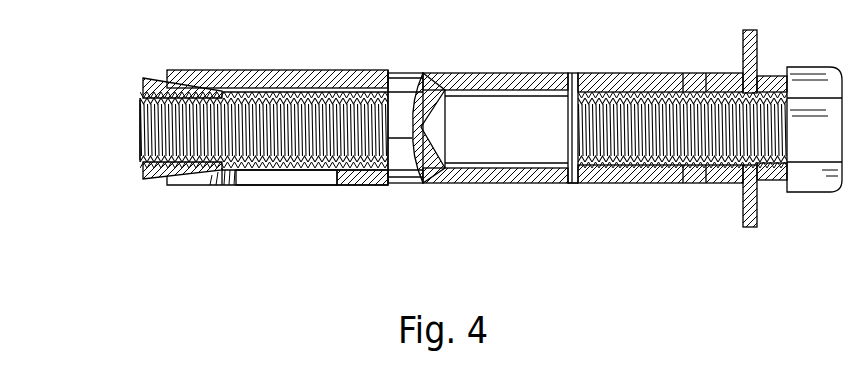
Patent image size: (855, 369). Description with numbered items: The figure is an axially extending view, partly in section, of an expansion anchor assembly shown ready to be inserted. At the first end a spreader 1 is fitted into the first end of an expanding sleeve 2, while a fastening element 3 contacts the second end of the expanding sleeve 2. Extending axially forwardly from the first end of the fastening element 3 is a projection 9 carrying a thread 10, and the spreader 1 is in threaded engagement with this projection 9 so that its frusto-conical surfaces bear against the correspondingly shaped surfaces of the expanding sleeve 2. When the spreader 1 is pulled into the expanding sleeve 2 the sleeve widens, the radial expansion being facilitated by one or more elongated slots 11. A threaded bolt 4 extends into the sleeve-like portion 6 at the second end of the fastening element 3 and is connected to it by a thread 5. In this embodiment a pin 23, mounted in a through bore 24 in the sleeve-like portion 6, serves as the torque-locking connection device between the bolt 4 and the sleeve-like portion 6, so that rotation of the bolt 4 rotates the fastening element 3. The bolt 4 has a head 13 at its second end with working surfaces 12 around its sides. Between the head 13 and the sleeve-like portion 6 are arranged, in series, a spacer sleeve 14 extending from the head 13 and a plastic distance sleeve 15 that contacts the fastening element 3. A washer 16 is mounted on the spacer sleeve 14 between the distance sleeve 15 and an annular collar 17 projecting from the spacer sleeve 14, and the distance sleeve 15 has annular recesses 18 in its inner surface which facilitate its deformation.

The spreader 1 is at (147, 161).
The expanding sleeve 2 is at (283, 72).
The fastening element 3 is at (407, 70).
The threaded bolt 4 is at (626, 86).
The thread 5 is at (640, 150).
The sleeve-like portion 6 is at (520, 73).
The projection 9 is at (137, 120).
The thread 10 is at (318, 145).
The elongated slot 11 is at (263, 182).
The working surfaces 12 is at (815, 150).
The head 13 is at (812, 63).
The spacer sleeve 14 is at (780, 182).
The distance sleeve 15 is at (712, 76).
The washer 16 is at (745, 215).
The annular collar 17 is at (767, 77).
The annular recesses 18 is at (713, 176).
The pin 23 is at (568, 137).
The through bore 24 is at (570, 185).